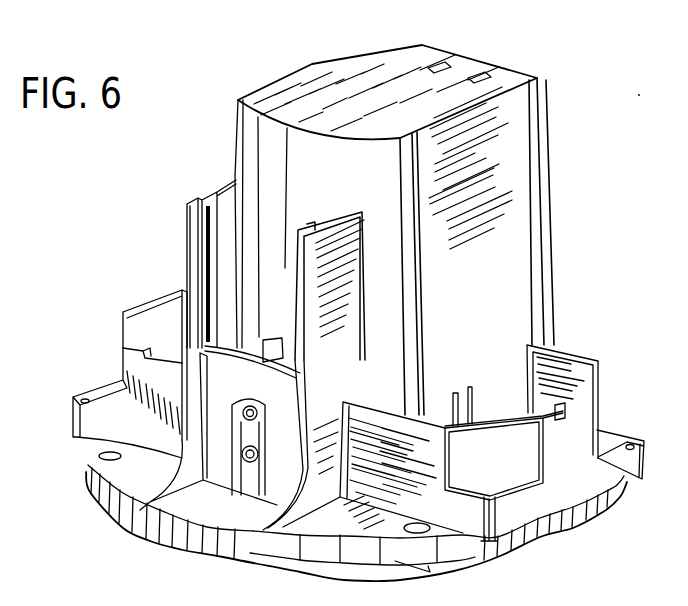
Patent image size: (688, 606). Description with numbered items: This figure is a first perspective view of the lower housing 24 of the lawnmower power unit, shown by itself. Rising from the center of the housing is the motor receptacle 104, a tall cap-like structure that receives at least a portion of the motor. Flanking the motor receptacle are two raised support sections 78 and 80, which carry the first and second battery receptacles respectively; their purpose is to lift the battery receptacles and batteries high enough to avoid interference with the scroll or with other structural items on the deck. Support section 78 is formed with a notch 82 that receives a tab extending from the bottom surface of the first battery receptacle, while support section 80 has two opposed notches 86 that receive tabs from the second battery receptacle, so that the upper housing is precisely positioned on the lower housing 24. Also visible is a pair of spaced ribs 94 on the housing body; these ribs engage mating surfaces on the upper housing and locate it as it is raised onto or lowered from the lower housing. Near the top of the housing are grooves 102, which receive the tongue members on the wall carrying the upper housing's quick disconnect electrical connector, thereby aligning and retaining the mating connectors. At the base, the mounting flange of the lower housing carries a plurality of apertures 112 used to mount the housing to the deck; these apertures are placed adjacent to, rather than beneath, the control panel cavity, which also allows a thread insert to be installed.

The lower housing 24 is at (541, 53).
The support section 78 is at (153, 325).
The support section 80 is at (575, 471).
The notch 82 is at (145, 358).
The notches 86 is at (560, 413).
The spaced ribs 94 is at (526, 315).
The grooves 102 is at (203, 200).
The motor receptacle 104 is at (366, 87).
The apertures 112 is at (110, 466).